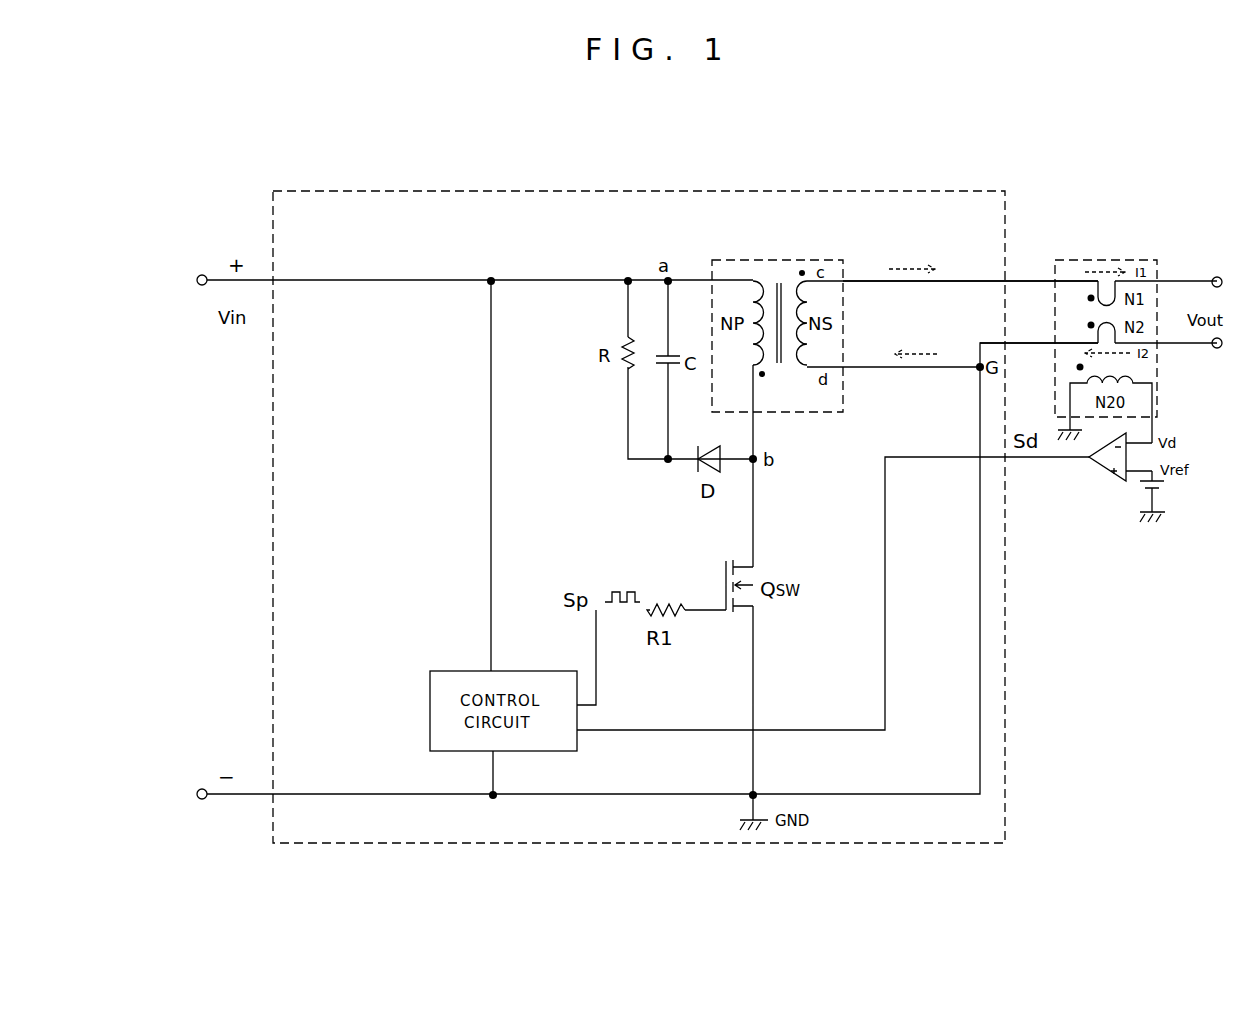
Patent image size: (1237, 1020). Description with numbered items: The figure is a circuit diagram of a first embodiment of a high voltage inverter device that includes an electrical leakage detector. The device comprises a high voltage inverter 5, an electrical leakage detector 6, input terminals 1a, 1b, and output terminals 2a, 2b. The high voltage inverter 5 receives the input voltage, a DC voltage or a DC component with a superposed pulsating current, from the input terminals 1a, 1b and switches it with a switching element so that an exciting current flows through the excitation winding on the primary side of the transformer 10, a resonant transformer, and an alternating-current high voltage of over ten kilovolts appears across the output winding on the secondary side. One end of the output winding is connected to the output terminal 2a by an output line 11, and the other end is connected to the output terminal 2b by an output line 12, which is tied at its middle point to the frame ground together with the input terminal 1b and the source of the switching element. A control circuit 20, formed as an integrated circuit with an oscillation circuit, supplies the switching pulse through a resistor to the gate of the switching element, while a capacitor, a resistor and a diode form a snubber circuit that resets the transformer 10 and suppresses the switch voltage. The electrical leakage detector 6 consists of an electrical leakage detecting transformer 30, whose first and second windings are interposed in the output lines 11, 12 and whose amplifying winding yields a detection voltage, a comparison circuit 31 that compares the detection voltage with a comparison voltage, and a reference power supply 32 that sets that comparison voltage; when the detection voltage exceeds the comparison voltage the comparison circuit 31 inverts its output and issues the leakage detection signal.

The input terminal 1a is at (202, 275).
The input terminal 1b is at (202, 800).
The output terminal 2a is at (1215, 277).
The output terminal 2b is at (1217, 349).
The high voltage inverter 5 is at (649, 190).
The electrical leakage detector 6 is at (1128, 548).
The transformer 10 is at (782, 259).
The output line 11 is at (1024, 279).
The output line 12 is at (1025, 346).
The control circuit 20 is at (430, 708).
The electrical leakage detecting transformer 30 is at (1098, 258).
The comparison circuit 31 is at (1103, 468).
The reference power supply 32 is at (1167, 485).